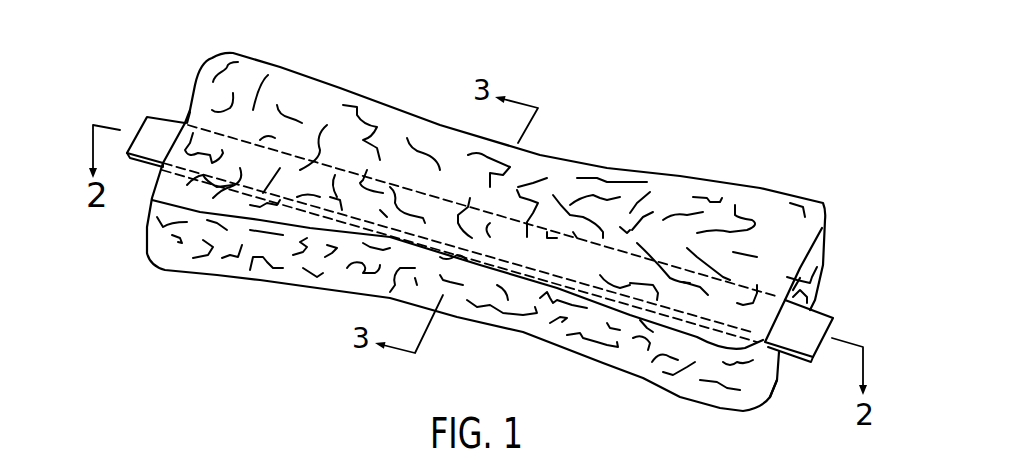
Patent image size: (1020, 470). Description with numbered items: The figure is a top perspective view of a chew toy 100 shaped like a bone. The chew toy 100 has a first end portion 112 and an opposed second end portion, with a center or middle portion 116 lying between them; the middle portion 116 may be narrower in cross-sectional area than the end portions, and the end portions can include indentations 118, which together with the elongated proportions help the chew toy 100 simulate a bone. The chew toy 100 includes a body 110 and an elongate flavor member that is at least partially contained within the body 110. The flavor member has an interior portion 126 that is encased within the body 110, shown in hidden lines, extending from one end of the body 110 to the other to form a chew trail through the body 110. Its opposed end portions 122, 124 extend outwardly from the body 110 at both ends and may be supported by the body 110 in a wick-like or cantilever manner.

The chew toy 100 is at (597, 110).
The body 110 is at (635, 173).
The first end portion 112 is at (779, 378).
The middle portion 116 is at (460, 315).
The indentations 118 is at (190, 112).
The end portion of the flavor member 122 is at (836, 317).
The end portion of the flavor member 124 is at (147, 117).
The interior portion 126 is at (317, 195).